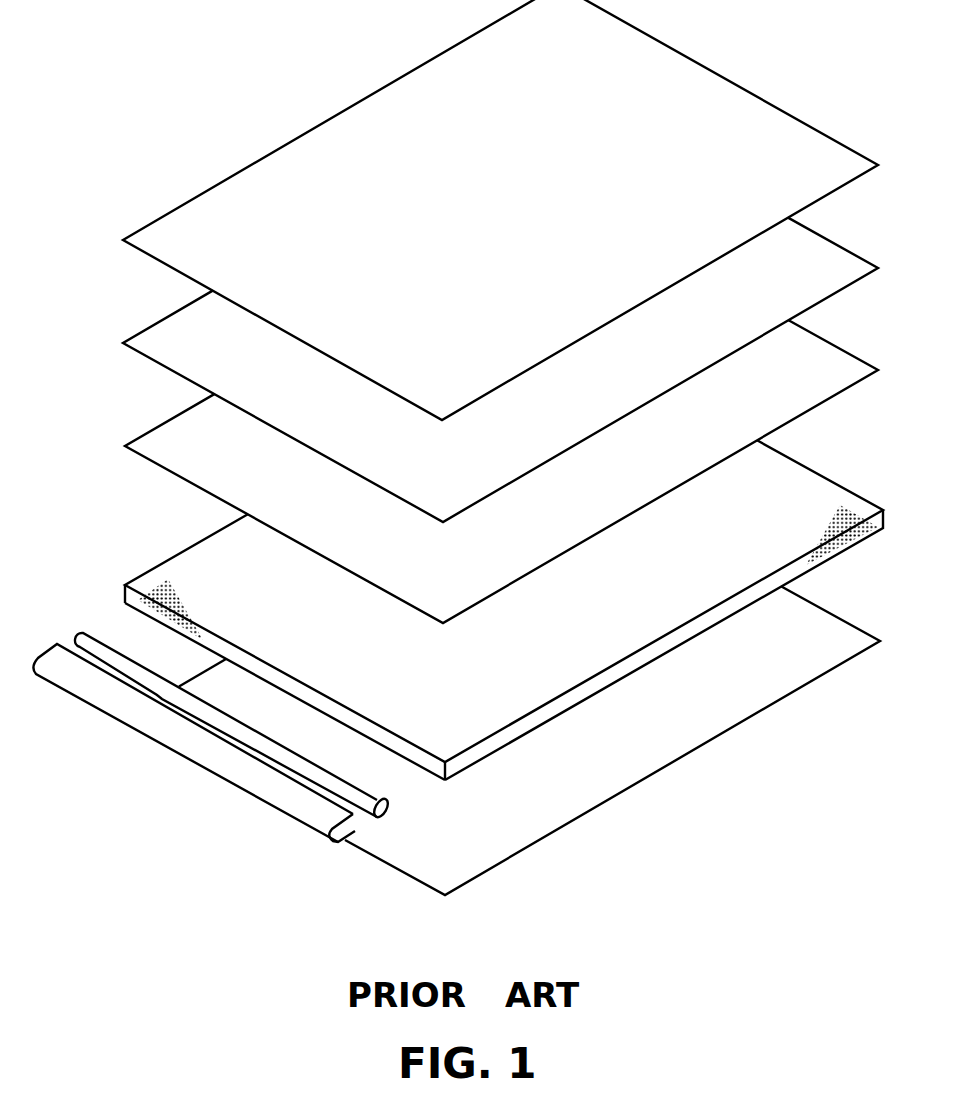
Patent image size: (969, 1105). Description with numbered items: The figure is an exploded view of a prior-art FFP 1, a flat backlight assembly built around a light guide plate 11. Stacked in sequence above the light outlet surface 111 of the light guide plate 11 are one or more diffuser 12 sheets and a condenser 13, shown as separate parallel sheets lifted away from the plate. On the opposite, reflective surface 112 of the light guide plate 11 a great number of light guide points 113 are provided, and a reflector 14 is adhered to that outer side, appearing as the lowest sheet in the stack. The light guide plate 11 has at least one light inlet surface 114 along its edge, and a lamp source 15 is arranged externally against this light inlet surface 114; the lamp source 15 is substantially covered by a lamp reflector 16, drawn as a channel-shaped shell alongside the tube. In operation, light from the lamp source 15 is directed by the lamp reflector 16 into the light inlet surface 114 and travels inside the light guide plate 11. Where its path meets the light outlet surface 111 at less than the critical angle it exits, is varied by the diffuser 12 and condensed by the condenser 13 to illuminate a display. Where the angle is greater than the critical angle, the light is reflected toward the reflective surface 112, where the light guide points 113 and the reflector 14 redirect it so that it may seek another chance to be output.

The FFP 1 is at (193, 70).
The light guide plate 11 is at (163, 558).
The light outlet surface 111 is at (212, 550).
The reflective surface 112 is at (505, 748).
The light guide points 113 is at (126, 595).
The light inlet surface 114 is at (212, 644).
The diffuser 12 is at (160, 366).
The condenser 13 is at (212, 220).
The reflector 14 is at (433, 874).
The lamp source 15 is at (376, 806).
The lamp reflector 16 is at (253, 785).